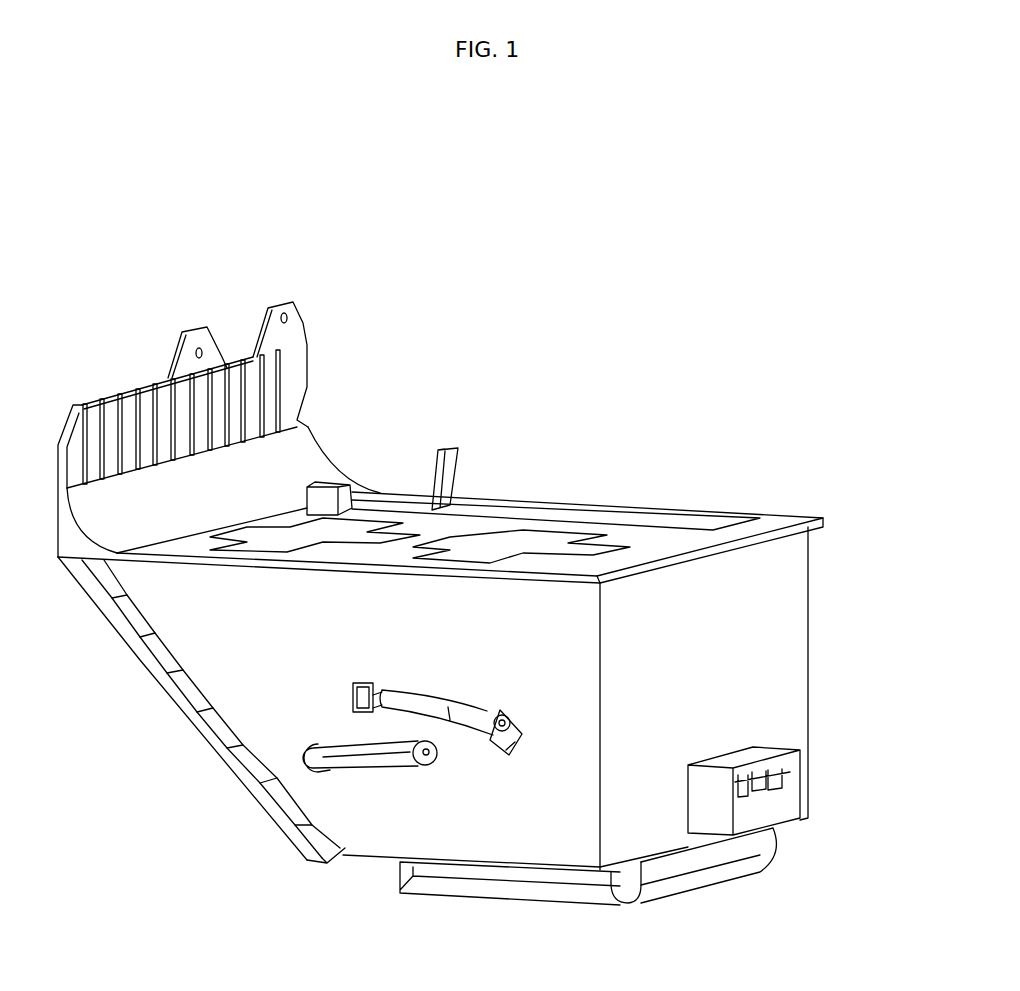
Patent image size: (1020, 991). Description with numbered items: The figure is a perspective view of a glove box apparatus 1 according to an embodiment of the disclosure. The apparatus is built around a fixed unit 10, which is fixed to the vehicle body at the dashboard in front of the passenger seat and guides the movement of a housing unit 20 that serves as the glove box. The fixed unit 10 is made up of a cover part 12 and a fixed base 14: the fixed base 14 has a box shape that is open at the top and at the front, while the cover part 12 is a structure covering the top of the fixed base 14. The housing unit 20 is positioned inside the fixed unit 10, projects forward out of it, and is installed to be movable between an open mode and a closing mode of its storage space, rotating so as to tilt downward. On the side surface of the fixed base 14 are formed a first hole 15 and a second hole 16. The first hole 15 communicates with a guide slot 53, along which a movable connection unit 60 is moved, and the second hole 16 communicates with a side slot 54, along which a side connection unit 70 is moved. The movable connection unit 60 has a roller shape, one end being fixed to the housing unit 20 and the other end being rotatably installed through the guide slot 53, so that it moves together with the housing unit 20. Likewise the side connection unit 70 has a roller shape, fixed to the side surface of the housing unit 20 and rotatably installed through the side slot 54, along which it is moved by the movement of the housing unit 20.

The glove box apparatus 1 is at (131, 230).
The fixed unit 10 is at (714, 364).
The cover part 12 is at (653, 544).
The fixed base 14 is at (775, 610).
The housing unit 20 is at (144, 784).
The first hole 15 is at (357, 771).
The second hole 16 is at (470, 738).
The guide slot 53 is at (337, 747).
The side slot 54 is at (397, 683).
The movable connection unit 60 is at (427, 771).
The side connection unit 70 is at (518, 758).